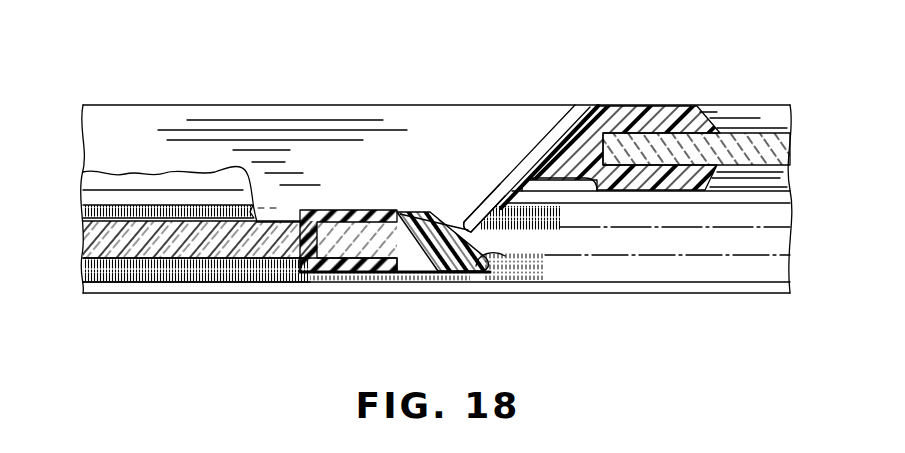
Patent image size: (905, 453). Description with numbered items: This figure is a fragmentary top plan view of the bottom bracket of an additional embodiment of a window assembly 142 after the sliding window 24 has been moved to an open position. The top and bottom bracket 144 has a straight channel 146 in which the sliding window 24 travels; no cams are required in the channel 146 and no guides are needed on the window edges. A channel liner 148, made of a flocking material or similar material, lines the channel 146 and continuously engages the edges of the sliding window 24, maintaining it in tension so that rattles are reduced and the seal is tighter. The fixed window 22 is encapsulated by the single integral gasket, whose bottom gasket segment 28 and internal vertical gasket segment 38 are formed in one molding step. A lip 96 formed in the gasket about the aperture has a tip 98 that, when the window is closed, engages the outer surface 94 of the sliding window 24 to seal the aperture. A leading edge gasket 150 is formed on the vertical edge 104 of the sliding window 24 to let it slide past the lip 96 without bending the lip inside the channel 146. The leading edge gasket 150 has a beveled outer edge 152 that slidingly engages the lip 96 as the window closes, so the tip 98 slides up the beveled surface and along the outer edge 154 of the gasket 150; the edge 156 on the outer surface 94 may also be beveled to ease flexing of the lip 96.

The fixed window 22 is at (757, 147).
The sliding window 24 is at (175, 250).
The bottom gasket segment 28 is at (257, 128).
The internal vertical gasket segment 38 is at (650, 120).
The outer surface 94 is at (112, 216).
The lip 96 is at (506, 177).
The tip 98 is at (463, 220).
The vertical edge 104 is at (400, 212).
The window assembly 142 is at (725, 347).
The top and bottom bracket 144 is at (618, 267).
The straight channel 146 is at (783, 195).
The channel liner 148 is at (88, 270).
The leading edge gasket 150 is at (437, 274).
The beveled outer edge 152 is at (504, 276).
The outer edge 154 is at (338, 210).
The edge of gasket 156 is at (316, 262).